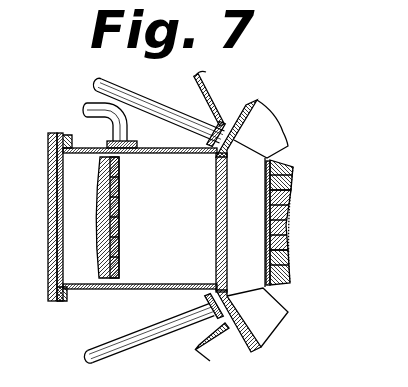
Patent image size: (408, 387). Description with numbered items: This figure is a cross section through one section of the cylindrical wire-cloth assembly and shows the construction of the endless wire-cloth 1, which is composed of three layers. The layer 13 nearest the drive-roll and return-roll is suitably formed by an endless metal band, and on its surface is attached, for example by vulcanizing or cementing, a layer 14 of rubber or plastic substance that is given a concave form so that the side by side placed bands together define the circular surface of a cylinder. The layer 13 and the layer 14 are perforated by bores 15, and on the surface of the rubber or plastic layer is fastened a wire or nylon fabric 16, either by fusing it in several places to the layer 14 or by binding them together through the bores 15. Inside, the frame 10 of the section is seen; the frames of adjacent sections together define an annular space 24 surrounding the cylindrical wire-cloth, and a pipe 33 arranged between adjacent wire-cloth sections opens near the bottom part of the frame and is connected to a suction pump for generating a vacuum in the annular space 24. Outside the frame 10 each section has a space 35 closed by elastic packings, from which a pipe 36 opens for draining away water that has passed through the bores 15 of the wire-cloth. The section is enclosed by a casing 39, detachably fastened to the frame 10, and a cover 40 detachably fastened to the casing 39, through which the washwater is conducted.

The endless wire-cloth 1 is at (298, 222).
The frame 10 is at (216, 229).
The layer 13 is at (268, 290).
The layer of rubber or plastic substance 14 is at (292, 180).
The bores 15 is at (282, 250).
The wire or nylon fabric 16 is at (283, 201).
The annular space 24 is at (216, 216).
The pipe 33 is at (101, 80).
The space 35 is at (142, 255).
The pipe 36 is at (92, 104).
The casing 39 is at (94, 148).
The cover 40 is at (48, 211).